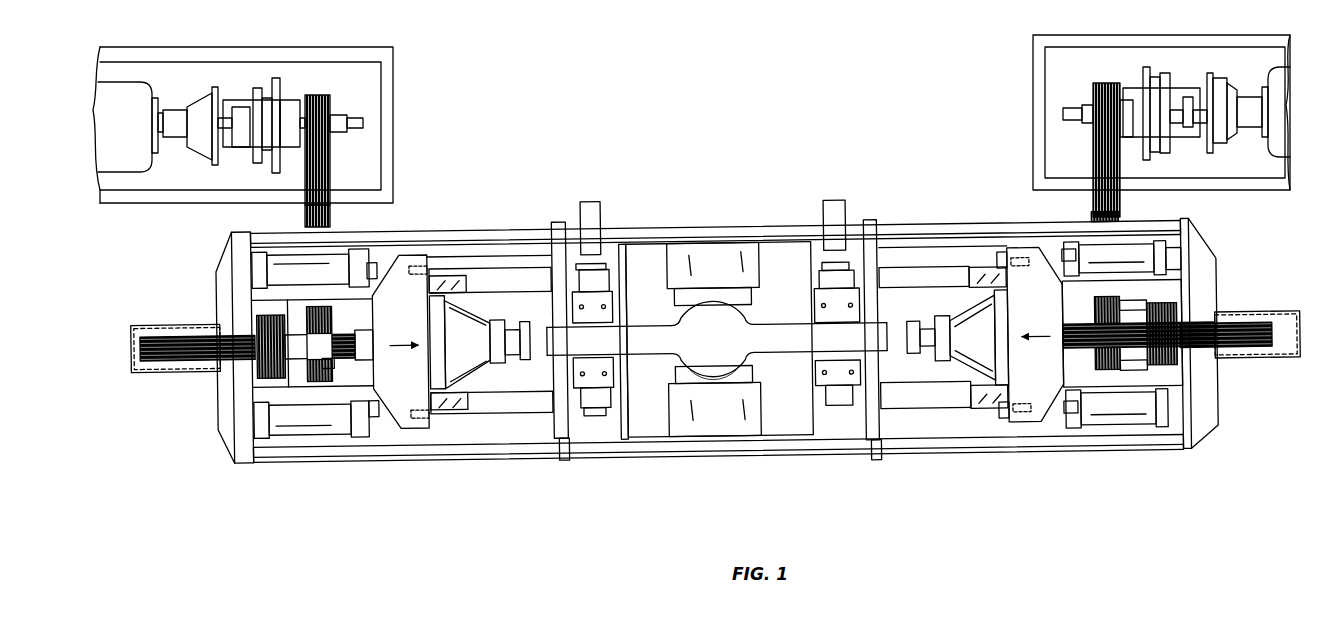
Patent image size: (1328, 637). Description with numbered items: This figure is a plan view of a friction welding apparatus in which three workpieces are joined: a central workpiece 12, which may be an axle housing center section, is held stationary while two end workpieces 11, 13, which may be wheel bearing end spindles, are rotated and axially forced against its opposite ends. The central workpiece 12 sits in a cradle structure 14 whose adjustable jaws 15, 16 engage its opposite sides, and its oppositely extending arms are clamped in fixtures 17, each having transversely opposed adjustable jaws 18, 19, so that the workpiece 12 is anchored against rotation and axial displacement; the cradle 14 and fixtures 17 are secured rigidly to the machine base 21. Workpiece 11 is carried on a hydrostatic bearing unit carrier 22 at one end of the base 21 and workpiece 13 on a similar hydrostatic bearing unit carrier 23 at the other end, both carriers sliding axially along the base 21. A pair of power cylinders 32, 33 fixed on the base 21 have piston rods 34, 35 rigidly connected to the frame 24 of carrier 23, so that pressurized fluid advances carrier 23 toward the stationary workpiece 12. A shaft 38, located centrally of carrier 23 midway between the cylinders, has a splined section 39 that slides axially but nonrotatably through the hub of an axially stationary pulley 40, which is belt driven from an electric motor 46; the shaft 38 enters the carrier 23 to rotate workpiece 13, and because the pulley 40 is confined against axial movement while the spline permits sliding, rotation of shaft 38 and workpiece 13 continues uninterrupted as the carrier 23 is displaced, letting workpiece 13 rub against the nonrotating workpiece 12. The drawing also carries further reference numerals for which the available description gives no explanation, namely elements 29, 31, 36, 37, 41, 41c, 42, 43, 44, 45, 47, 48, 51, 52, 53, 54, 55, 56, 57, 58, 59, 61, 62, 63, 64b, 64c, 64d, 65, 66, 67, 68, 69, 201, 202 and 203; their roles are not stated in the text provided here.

The workpiece 11 is at (521, 319).
The central workpiece 12 is at (703, 346).
The workpiece 13 is at (918, 328).
The cradle structure 14 is at (682, 258).
The adjustable jaw 15 is at (752, 298).
The adjustable jaw 16 is at (752, 375).
The fixture 17 is at (594, 410).
The jaw 18 is at (612, 306).
The jaw 19 is at (606, 372).
The machine base 21 is at (762, 228).
The hydrostatic bearing unit carrier 22 is at (418, 285).
The hydrostatic bearing unit carrier 23 is at (1020, 270).
The frame 24 is at (1030, 427).
The upper guide rail 29 is at (957, 278).
The lower guide rail 31 is at (935, 398).
The power cylinder 32 is at (1160, 266).
The power cylinder 33 is at (1122, 430).
The piston rod 34 is at (1055, 256).
The piston rod 35 is at (1060, 424).
The rod connection 36 is at (1000, 262).
The centering cone 37 is at (972, 350).
The shaft 38 is at (1085, 358).
The splined section 39 is at (1100, 330).
The pulley 40 is at (1135, 312).
The pulley 41 is at (1176, 350).
The spacer 41c is at (1126, 362).
The drive belt 42 is at (1108, 302).
The drive belt 43 is at (1118, 90).
The shaft end 44 is at (1070, 112).
The clutch assembly 45 is at (1220, 70).
The electric motor 46 is at (1280, 113).
The clutch cone 47 is at (1230, 136).
The brake disc assembly 48 is at (1158, 80).
The piston rod 51 is at (415, 412).
The upper guide rail 52 is at (541, 274).
The lower guide rail 53 is at (493, 399).
The upper cylinder 54 is at (340, 256).
The lower cylinder 55 is at (318, 425).
The headstock 56 is at (396, 262).
The piston rod 57 is at (373, 426).
The spindle nut 58 is at (348, 327).
The spacer 59 is at (333, 362).
The bearing 61 is at (292, 355).
The centering cone 62 is at (472, 333).
The pulley 63 is at (262, 363).
The pulley 64b is at (308, 312).
The drive belt 64c is at (312, 222).
The drive belt 64d is at (318, 100).
The shaft end 65 is at (347, 118).
The drive unit 66 is at (294, 78).
The motor 67 is at (118, 95).
The clutch cone 68 is at (203, 95).
The brake disc assembly 69 is at (264, 92).
The left support post 201 is at (486, 428).
The center frame 202 is at (658, 420).
The right support post 203 is at (918, 418).